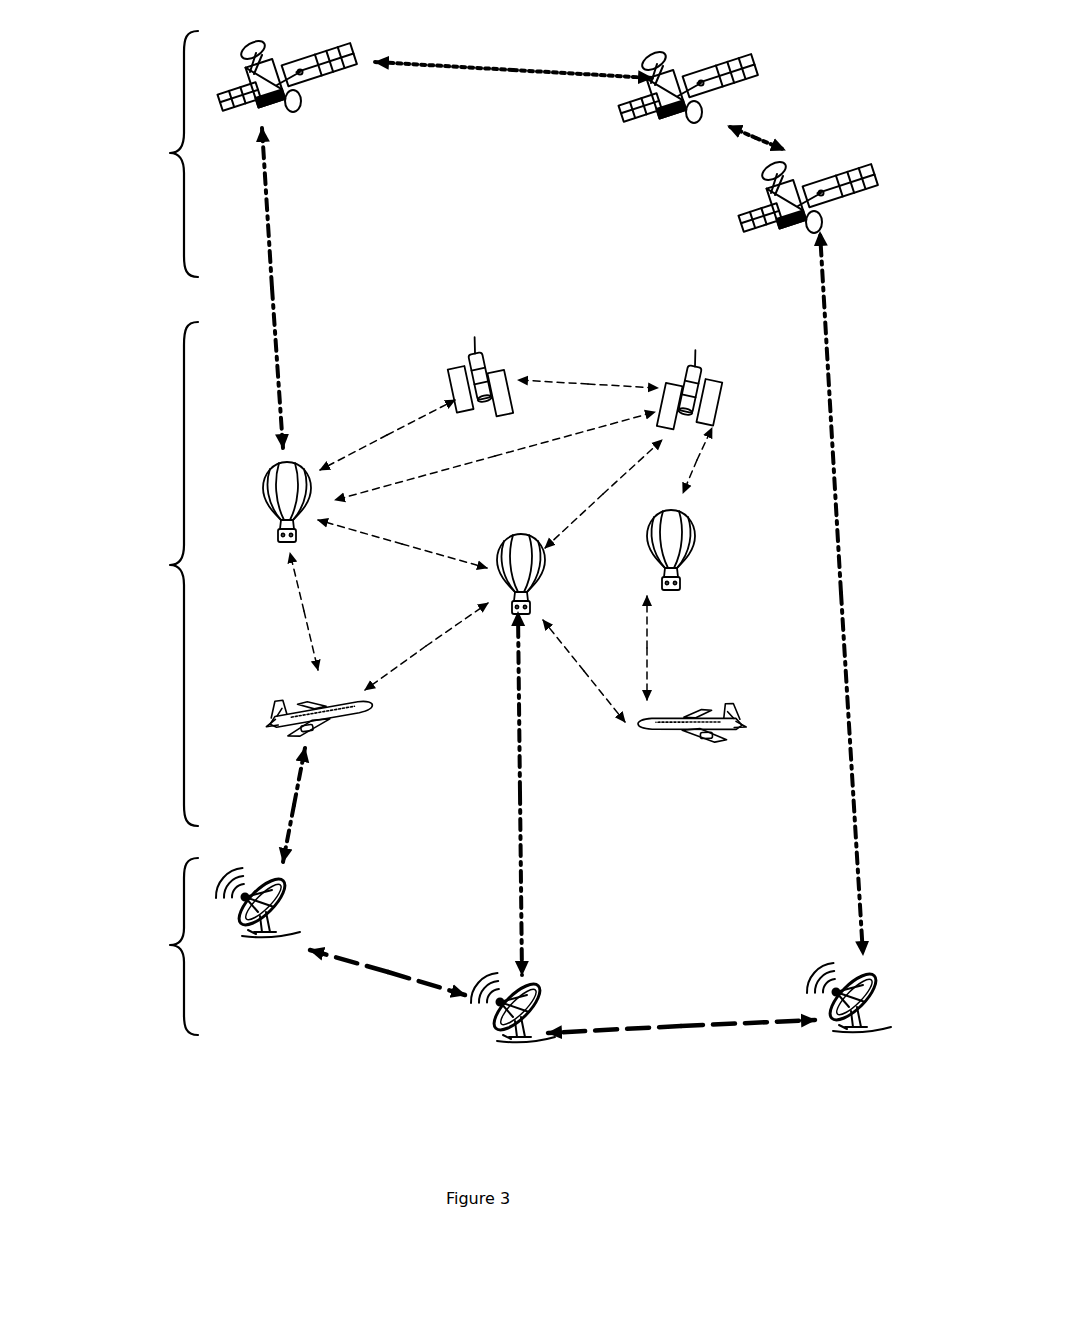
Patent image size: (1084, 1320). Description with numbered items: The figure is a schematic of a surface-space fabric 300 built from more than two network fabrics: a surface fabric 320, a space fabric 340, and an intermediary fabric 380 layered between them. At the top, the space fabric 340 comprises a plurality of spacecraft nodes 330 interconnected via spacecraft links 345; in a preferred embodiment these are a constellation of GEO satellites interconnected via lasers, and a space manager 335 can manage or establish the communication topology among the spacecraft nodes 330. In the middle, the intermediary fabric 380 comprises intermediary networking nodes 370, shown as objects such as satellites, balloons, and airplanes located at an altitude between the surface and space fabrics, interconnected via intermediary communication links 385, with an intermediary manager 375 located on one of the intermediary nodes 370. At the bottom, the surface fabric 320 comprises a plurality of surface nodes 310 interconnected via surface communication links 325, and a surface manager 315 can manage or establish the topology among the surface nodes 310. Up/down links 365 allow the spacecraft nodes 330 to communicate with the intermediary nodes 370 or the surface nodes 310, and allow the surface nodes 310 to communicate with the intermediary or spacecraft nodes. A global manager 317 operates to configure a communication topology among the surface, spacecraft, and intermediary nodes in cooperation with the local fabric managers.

The surface-space fabric 300 is at (238, 1138).
The surface nodes 310 is at (552, 987).
The surface manager 315 is at (828, 1035).
The global manager 317 is at (250, 950).
The surface fabric 320 is at (491, 982).
The surface communication links 325 is at (385, 975).
The spacecraft nodes 330 is at (715, 138).
The space manager 335 is at (807, 138).
The space fabric 340 is at (489, 154).
The spacecraft links 345 is at (400, 78).
The up/down links 365 is at (283, 228).
The intermediary networking nodes 370 is at (502, 539).
The intermediary manager 375 is at (254, 527).
The intermediary fabric 380 is at (436, 574).
The intermediary communication links 385 is at (313, 642).